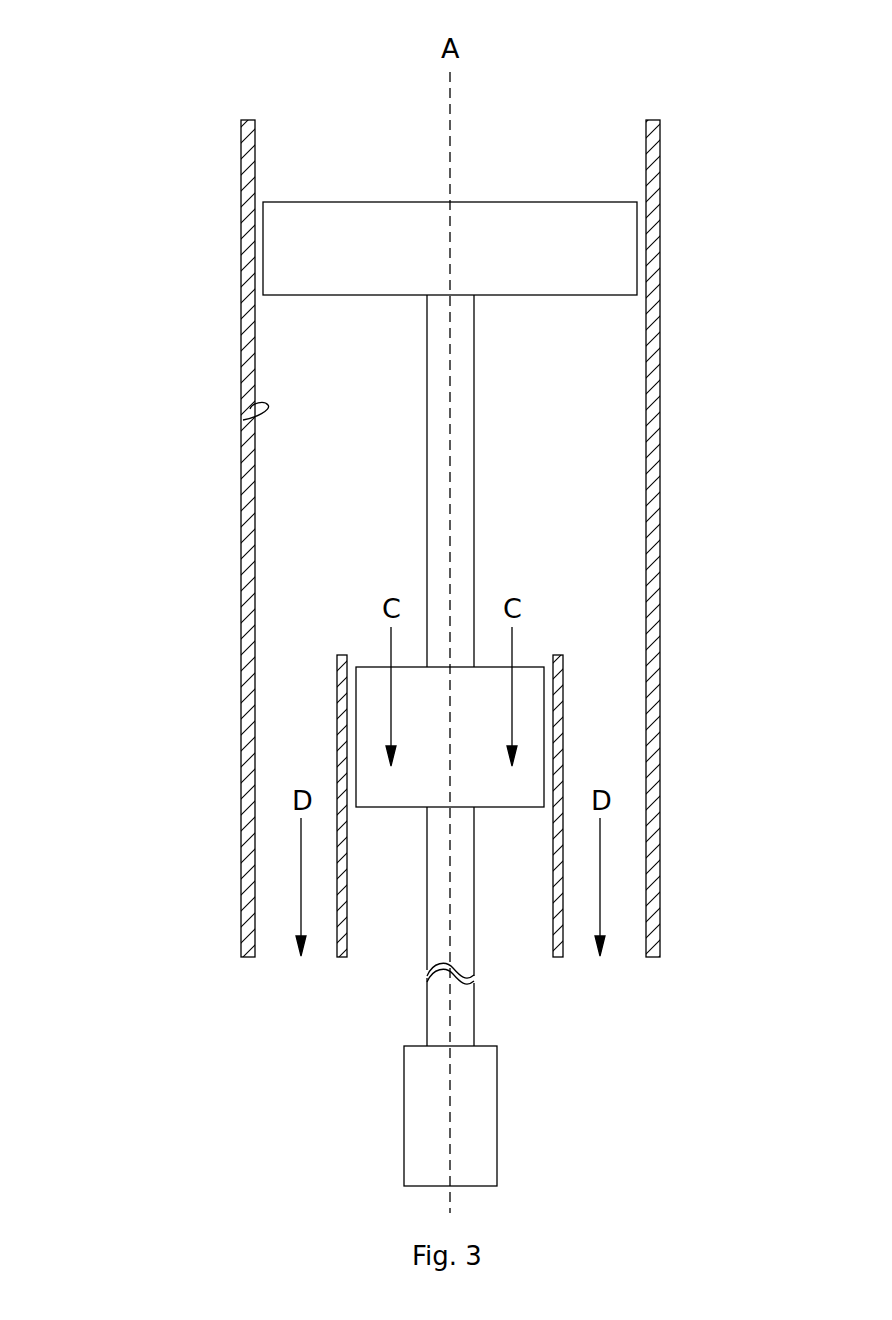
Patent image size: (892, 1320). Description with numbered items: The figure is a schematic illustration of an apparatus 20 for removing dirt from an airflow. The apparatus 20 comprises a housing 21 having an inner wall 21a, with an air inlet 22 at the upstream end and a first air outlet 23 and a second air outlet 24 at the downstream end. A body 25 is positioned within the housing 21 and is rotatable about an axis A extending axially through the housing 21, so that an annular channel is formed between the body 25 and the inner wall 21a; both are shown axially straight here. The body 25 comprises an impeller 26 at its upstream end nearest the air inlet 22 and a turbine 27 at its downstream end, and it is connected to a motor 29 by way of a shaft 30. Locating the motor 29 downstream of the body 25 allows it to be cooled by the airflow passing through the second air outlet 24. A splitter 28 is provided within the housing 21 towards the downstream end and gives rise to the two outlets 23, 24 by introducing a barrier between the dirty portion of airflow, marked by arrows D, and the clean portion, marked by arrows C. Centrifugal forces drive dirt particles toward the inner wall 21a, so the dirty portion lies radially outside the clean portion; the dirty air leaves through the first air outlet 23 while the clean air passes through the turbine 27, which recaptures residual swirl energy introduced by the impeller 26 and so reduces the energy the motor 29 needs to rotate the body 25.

The apparatus 20 is at (148, 118).
The housing 21 is at (247, 505).
The inner wall 21a is at (243, 420).
The air inlet 22 is at (543, 118).
The first air outlet 23 is at (627, 957).
The second air outlet 24 is at (520, 957).
The body 25 is at (474, 515).
The impeller 26 is at (590, 259).
The turbine 27 is at (370, 780).
The splitter 28 is at (558, 655).
The motor 29 is at (473, 1103).
The shaft 30 is at (441, 1003).